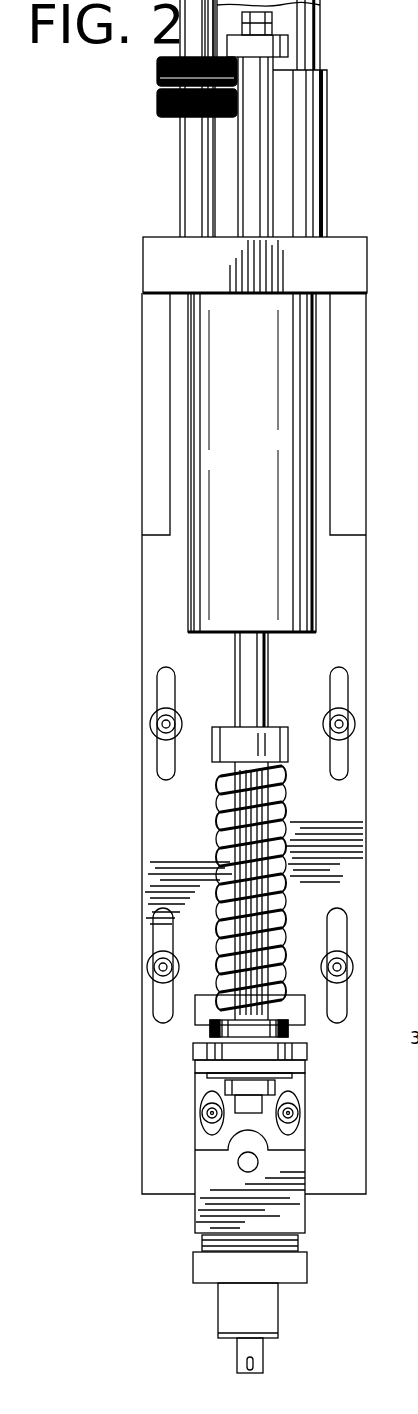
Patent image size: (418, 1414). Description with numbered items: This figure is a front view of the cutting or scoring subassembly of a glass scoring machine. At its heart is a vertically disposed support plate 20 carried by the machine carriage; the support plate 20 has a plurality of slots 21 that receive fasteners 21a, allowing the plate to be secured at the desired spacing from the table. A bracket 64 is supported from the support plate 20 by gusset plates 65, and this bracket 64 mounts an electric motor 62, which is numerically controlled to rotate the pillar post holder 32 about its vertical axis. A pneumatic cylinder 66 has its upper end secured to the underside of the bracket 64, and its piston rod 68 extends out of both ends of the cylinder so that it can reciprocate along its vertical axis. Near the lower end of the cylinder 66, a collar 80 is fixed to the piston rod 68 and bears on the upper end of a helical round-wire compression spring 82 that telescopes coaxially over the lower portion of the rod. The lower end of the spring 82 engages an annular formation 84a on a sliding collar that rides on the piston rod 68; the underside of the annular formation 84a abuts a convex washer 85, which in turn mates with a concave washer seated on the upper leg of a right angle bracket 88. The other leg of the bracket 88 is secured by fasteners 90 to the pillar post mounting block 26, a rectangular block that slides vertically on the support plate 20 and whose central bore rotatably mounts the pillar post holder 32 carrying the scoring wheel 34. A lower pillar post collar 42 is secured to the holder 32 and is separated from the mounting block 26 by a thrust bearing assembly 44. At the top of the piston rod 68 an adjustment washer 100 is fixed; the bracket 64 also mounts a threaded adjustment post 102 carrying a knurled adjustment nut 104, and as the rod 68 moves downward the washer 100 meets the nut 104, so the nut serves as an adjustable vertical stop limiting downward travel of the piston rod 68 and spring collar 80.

The support plate 20 is at (366, 660).
The slots 21 is at (158, 680).
The fasteners 21a is at (150, 722).
The pillar post mounting block 26 is at (195, 1217).
The pillar post holder 32 is at (240, 1310).
The scoring wheel 34 is at (253, 1372).
The lower pillar post collar 42 is at (283, 1268).
The thrust bearing assembly 44 is at (298, 1243).
The electric motor 62 is at (312, 178).
The bracket 64 is at (170, 268).
The gusset plates 65 is at (162, 393).
The pneumatic cylinder 66 is at (258, 457).
The piston rod 68 is at (235, 648).
The collar 80 is at (280, 747).
The helical round-wire compression spring 82 is at (218, 870).
The annular formation 84a is at (210, 1022).
The convex washer 85 is at (296, 1052).
The right angle bracket 88 is at (195, 1065).
The fasteners 90 is at (200, 1113).
The adjustment washer 100 is at (288, 42).
The adjustment post 102 is at (180, 163).
The knurled adjustment nut 104 is at (157, 62).